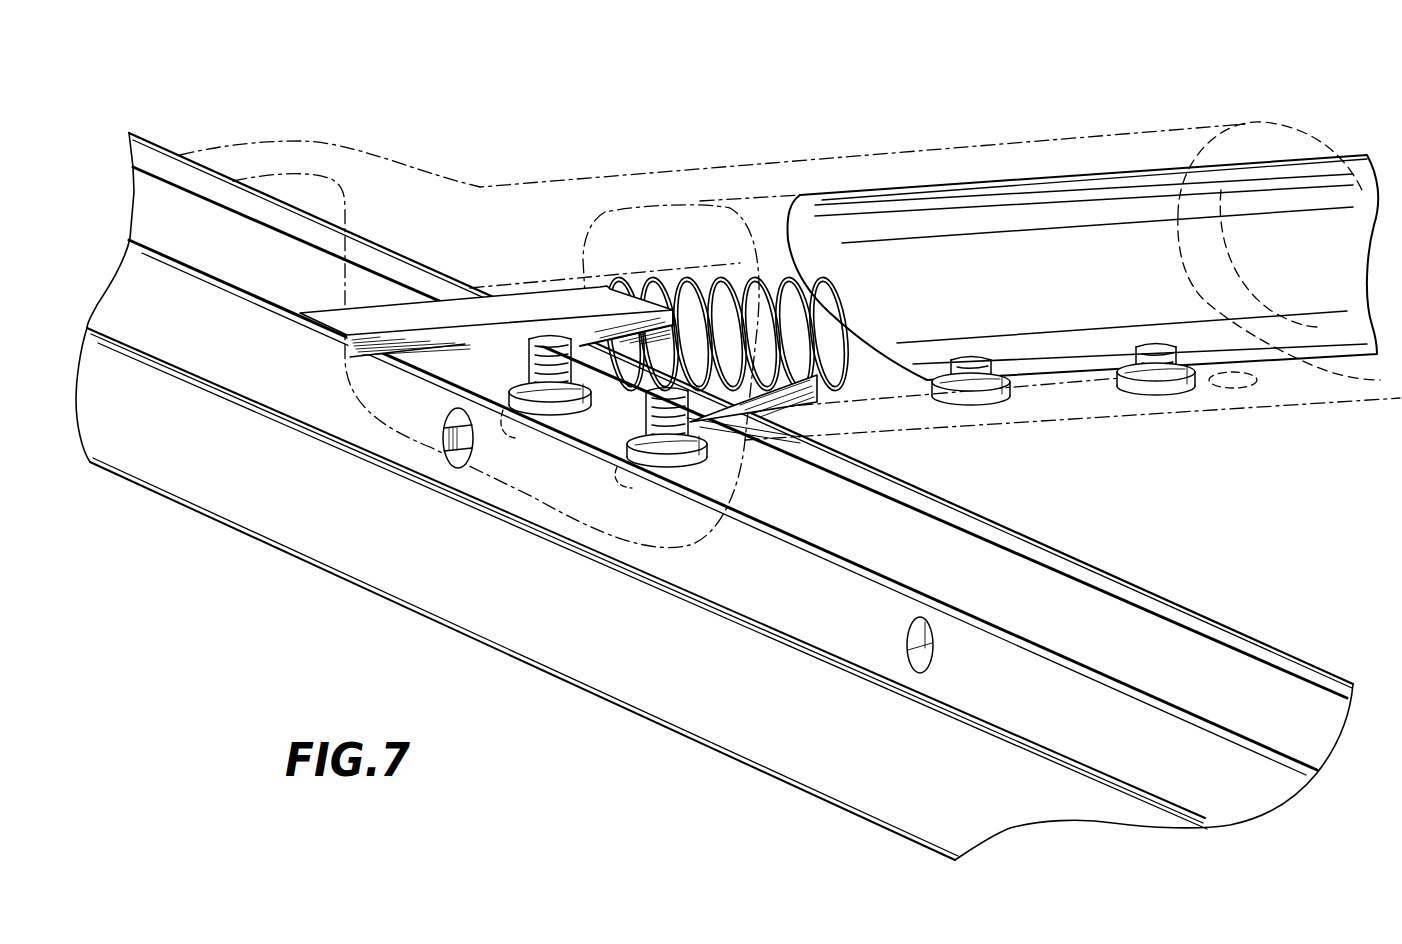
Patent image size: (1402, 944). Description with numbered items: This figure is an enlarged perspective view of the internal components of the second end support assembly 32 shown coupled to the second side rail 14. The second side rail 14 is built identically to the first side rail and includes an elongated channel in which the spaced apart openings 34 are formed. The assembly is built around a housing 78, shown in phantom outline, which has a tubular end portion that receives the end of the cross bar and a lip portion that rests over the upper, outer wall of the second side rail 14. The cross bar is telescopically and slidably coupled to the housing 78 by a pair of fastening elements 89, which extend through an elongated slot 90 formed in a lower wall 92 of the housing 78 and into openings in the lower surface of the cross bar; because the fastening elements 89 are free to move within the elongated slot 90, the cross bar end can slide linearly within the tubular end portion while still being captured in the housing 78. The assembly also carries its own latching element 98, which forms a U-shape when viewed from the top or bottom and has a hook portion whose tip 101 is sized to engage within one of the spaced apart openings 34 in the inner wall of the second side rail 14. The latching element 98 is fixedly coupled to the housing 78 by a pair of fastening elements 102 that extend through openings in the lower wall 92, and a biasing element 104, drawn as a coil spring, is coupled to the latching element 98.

The second side rail 14 is at (1243, 612).
The second end support assembly 32 is at (905, 131).
The spaced apart openings 34 is at (930, 658).
The housing 78 is at (683, 166).
The fastening elements 89 is at (987, 400).
The elongated slot 90 is at (1225, 392).
The lower wall 92 is at (1295, 402).
The latching element 98 is at (492, 372).
The tip 101 is at (473, 440).
The fastening elements 102 is at (557, 407).
The biasing element 104 is at (675, 288).